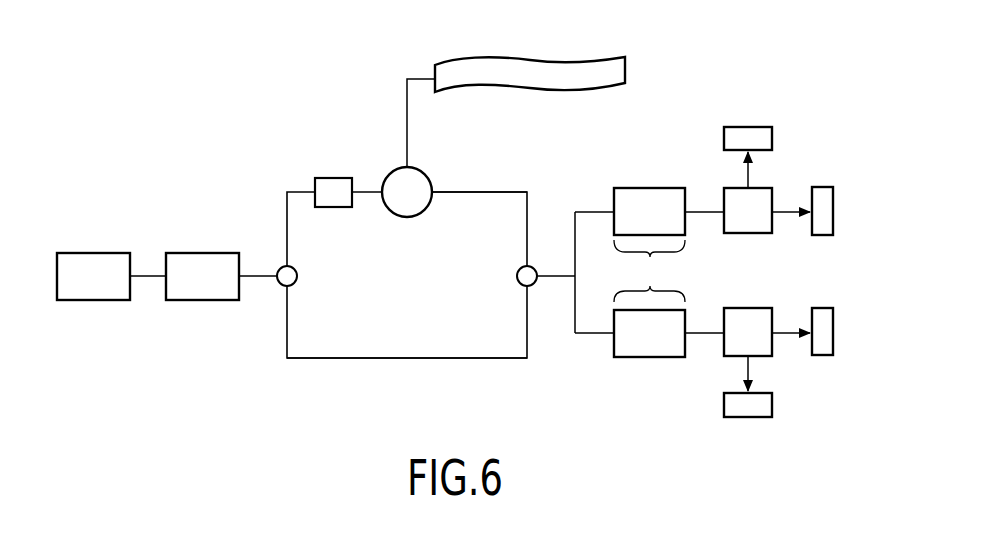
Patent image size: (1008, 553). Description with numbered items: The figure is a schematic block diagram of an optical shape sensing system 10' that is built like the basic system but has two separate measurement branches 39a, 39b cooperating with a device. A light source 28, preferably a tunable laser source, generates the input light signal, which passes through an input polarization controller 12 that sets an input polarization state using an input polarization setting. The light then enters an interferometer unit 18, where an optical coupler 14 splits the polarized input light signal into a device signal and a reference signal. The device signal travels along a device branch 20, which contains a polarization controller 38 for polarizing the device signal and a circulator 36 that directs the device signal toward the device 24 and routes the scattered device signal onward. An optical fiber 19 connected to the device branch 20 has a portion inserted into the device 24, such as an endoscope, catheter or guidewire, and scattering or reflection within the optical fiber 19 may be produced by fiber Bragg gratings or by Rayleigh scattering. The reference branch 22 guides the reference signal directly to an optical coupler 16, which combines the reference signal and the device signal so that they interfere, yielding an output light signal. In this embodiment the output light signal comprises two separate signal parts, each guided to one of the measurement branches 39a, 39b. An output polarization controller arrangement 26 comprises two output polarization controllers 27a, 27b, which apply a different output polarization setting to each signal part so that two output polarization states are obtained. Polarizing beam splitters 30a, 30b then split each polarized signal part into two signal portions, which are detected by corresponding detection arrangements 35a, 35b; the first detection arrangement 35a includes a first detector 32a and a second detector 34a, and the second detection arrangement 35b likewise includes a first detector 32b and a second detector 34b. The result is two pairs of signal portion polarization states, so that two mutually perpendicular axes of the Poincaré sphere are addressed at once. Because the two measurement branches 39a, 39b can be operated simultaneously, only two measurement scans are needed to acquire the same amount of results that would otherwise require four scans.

The optical shape sensing system 10' is at (427, 191).
The input polarization controller 12 is at (205, 302).
The optical coupler 14 is at (297, 276).
The optical coupler 16 is at (517, 276).
The interferometer unit 18 is at (407, 296).
The optical fiber 19 is at (418, 78).
The device branch 20 is at (484, 191).
The reference branch 22 is at (409, 360).
The device 24 is at (563, 62).
The output polarization controller arrangement 26 is at (649, 271).
The output polarization controller 27a is at (650, 187).
The output polarization controller 27b is at (651, 360).
The light source 28 is at (97, 302).
The polarizing beam splitter 30a is at (736, 187).
The polarizing beam splitter 30b is at (740, 357).
The first detector 32a is at (823, 186).
The first detector 32b is at (824, 357).
The second detector 34a is at (748, 126).
The second detector 34b is at (750, 420).
The detection arrangement 35a is at (796, 116).
The detection arrangement 35b is at (798, 434).
The circulator 36 is at (396, 169).
The polarization controller 38 is at (335, 177).
The measurement branch 39a is at (692, 126).
The measurement branch 39b is at (695, 419).